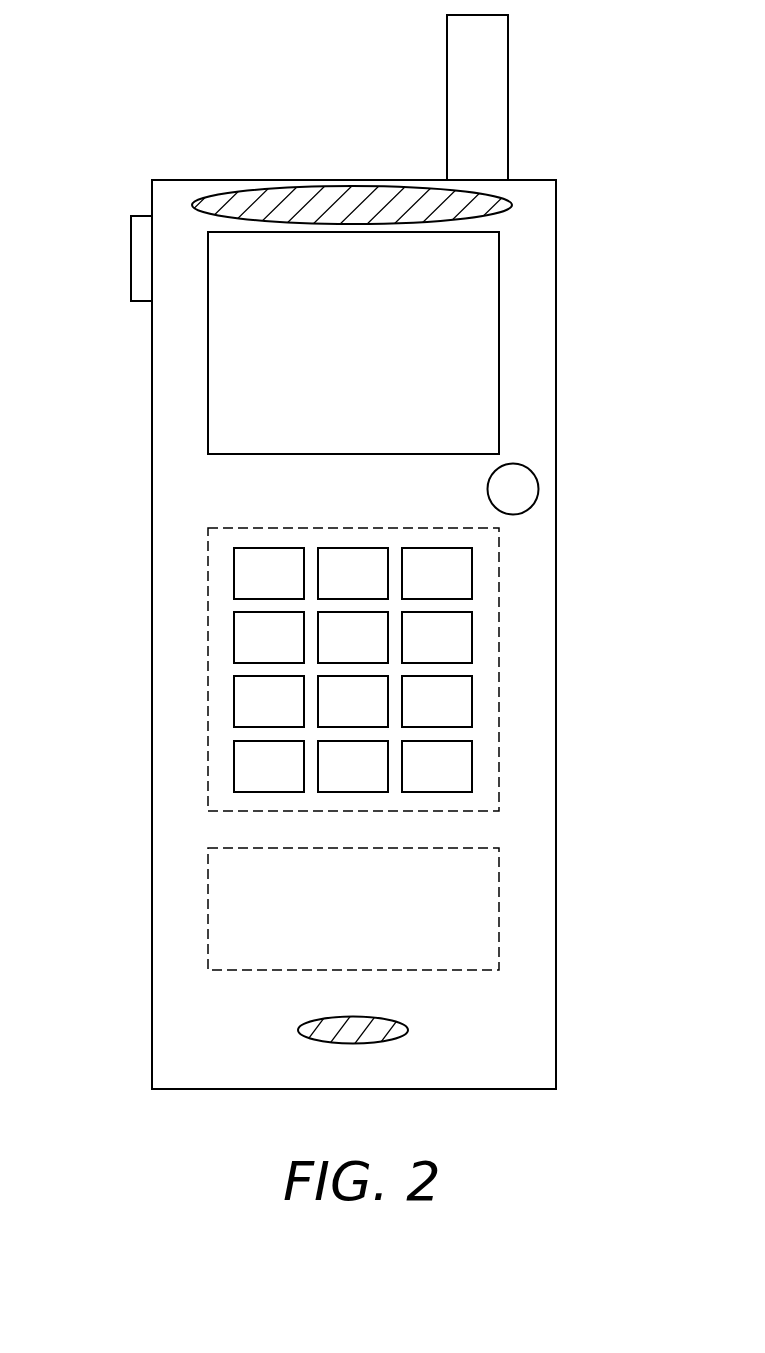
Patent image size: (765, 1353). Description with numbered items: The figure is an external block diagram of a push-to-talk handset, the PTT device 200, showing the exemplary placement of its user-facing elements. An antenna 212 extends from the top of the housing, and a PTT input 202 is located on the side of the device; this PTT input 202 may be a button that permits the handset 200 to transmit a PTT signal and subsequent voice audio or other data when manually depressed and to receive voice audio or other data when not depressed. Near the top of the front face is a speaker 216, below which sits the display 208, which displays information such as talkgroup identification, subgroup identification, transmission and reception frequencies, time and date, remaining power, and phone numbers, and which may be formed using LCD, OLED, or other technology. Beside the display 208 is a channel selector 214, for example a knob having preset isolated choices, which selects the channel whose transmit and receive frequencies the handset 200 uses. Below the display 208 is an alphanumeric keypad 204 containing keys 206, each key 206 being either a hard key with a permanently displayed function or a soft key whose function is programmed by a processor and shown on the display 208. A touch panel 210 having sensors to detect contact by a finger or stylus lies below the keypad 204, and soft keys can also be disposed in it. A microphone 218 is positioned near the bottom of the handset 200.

The PTT device 200 is at (517, 1064).
The PTT input 202 is at (131, 261).
The alphanumeric keypad 204 is at (354, 669).
The key 206 is at (234, 574).
The display 208 is at (499, 344).
The touch panel 210 is at (499, 910).
The antenna 212 is at (508, 98).
The channel selector 214 is at (538, 489).
The speaker 216 is at (328, 193).
The microphone 218 is at (355, 1044).